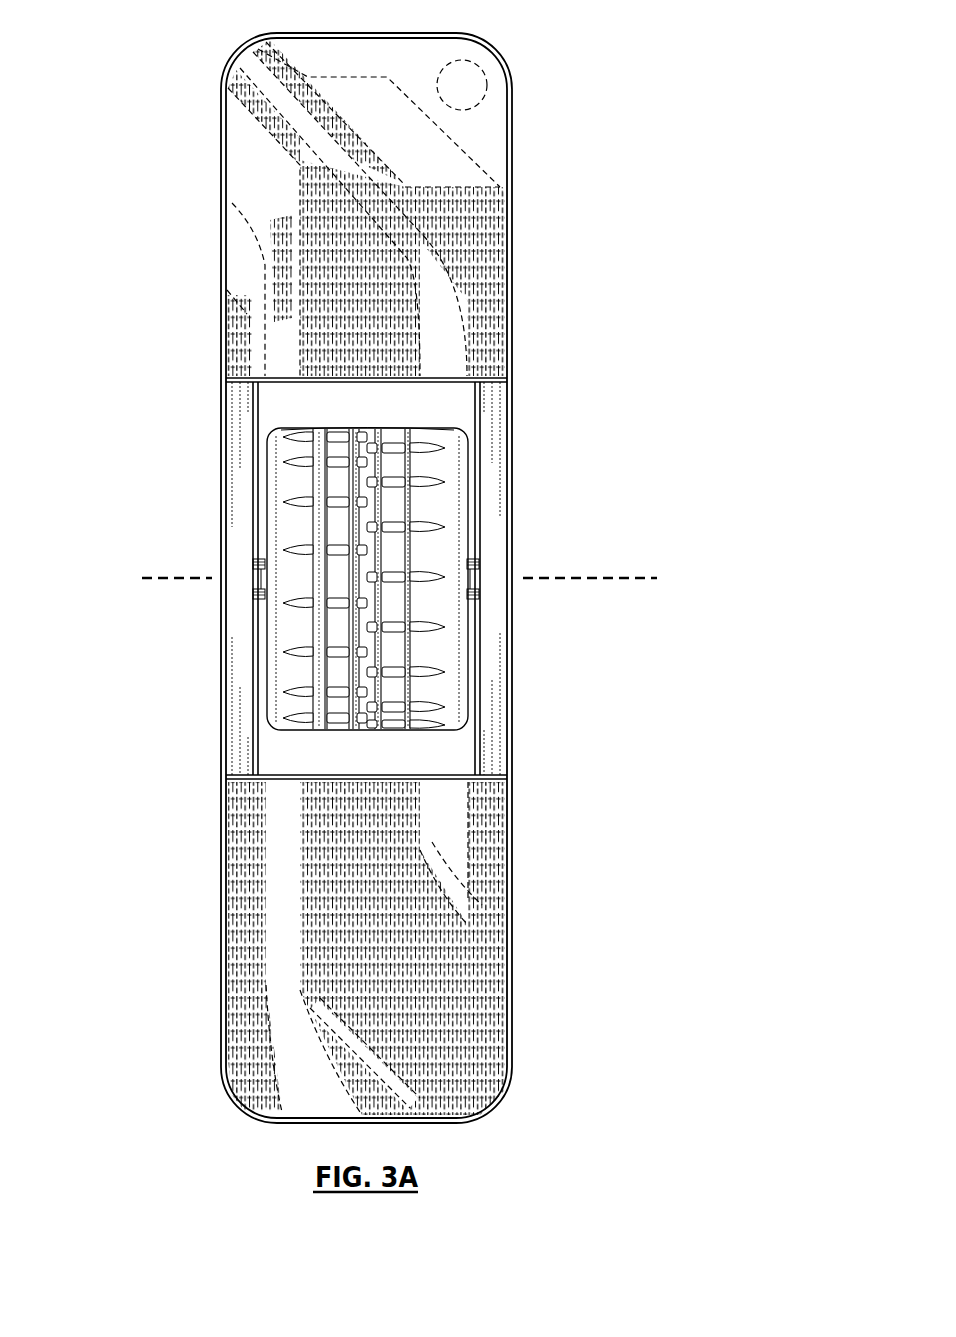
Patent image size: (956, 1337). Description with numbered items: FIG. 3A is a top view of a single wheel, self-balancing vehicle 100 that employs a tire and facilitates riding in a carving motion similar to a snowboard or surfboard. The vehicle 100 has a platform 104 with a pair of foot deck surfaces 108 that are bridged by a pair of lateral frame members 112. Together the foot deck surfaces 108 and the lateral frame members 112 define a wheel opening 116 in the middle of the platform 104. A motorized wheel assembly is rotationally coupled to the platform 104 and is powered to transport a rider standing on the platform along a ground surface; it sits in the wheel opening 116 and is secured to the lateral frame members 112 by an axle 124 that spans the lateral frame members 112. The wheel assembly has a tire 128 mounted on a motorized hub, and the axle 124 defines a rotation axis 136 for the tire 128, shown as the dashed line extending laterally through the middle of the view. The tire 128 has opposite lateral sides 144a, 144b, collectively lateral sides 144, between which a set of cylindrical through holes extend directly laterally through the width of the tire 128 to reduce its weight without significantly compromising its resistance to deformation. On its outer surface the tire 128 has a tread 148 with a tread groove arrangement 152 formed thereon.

The single wheel, self-balancing vehicle 100 is at (146, 165).
The platform 104 is at (513, 97).
The foot deck surfaces 108 is at (447, 237).
The lateral frame members 112 is at (233, 527).
The wheel opening 116 is at (454, 406).
The axle 124 is at (474, 573).
The tire 128 is at (276, 637).
The rotation axis 136 is at (592, 578).
The lateral sides 144 is at (360, 582).
The lateral side 144a is at (262, 688).
The lateral side 144b is at (470, 632).
The tread 148 is at (400, 660).
The tread groove arrangement 152 is at (293, 425).